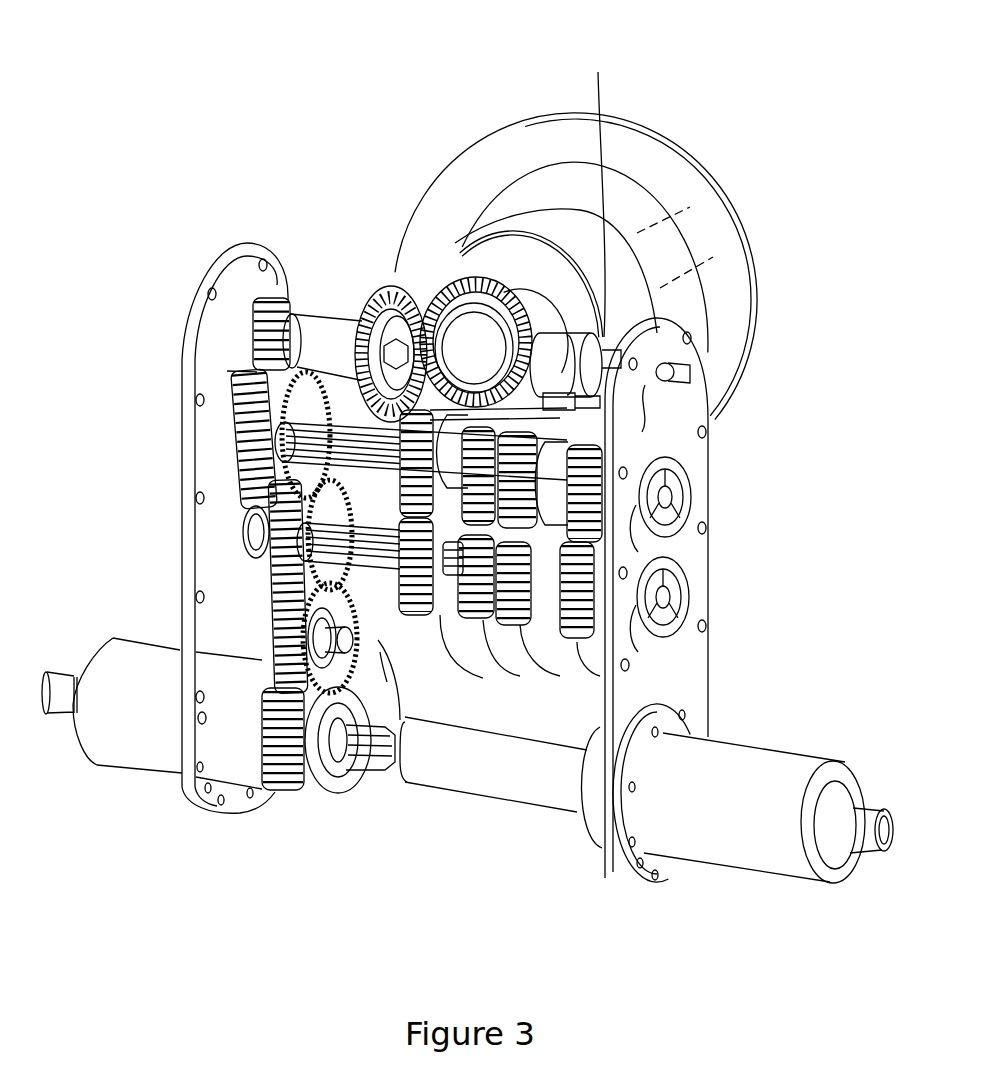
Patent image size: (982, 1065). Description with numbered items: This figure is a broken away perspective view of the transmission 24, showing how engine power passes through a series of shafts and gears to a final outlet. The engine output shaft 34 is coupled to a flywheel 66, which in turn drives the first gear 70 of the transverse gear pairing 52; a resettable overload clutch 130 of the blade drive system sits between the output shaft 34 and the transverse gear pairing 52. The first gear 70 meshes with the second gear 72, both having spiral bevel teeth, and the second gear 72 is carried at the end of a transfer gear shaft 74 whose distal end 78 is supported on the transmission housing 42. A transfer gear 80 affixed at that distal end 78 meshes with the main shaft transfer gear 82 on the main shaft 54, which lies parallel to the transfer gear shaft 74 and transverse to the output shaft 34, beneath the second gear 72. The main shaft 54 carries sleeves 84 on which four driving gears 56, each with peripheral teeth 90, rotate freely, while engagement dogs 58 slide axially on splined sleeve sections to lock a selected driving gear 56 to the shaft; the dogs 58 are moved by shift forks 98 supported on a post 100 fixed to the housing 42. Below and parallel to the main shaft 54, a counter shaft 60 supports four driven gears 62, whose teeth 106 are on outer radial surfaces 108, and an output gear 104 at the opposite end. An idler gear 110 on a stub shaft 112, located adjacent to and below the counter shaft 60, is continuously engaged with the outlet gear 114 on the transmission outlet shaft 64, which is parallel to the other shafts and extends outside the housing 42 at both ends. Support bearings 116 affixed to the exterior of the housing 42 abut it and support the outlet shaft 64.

The transmission 24 is at (777, 272).
The output shaft 34 is at (657, 227).
The transmission housing 42 is at (708, 652).
The transverse gear pairing 52 is at (455, 256).
The main shaft 54 is at (270, 463).
The driving gears 56 is at (584, 557).
The engagement dogs 58 is at (590, 424).
The counter shaft 60 is at (264, 492).
The driven gears 62 is at (568, 678).
The outlet shaft 64 is at (518, 803).
The flywheel 66 is at (476, 141).
The first gear 70 is at (423, 300).
The second gear 72 is at (380, 297).
The transfer gear shaft 74 is at (255, 336).
The distal end 78 is at (233, 272).
The transfer gear 80 is at (258, 307).
The main shaft transfer gear 82 is at (238, 425).
The sleeves 84 is at (248, 388).
The peripheral teeth 90 is at (600, 485).
The shift forks 98 is at (540, 335).
The post 100 is at (612, 333).
The output gear 104 is at (266, 586).
The teeth 106 is at (584, 623).
The outer radial surfaces 108 is at (585, 567).
The idler gear 110 is at (272, 677).
The stub shaft 112 is at (328, 793).
The outlet gear 114 is at (283, 793).
The support bearings 116 is at (140, 772).
The resettable overload clutch 130 is at (532, 214).